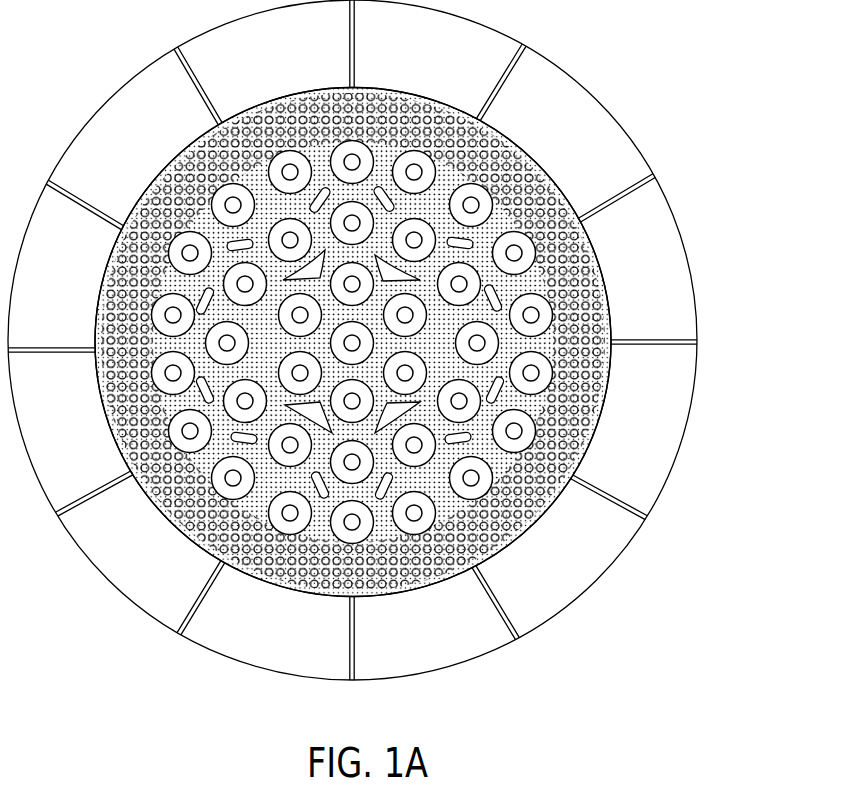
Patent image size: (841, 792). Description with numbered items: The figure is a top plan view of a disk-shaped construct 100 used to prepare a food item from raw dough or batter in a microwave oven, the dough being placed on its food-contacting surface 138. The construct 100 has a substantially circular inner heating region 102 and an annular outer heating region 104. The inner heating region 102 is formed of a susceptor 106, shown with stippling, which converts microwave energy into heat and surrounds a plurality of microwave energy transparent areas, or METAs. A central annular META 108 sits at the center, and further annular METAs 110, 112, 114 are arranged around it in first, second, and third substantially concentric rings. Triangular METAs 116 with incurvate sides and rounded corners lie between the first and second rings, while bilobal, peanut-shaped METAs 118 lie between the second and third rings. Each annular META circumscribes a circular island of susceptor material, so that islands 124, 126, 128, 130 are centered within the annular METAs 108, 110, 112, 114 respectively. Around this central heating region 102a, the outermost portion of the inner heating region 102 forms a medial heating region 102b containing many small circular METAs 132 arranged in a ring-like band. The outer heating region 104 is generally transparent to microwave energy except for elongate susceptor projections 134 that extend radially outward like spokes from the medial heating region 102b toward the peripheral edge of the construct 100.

The construct 100 is at (654, 65).
The inner heating region 102 is at (288, 79).
The central heating region 102a is at (504, 207).
The medial heating region 102b is at (188, 158).
The outer heating region 104 is at (141, 84).
The susceptor 106 is at (415, 84).
The annular META 108 is at (376, 346).
The annular META 110 is at (287, 369).
The annular META 112 is at (240, 285).
The annular META 114 is at (538, 372).
The triangular META 116 is at (313, 420).
The bilobal META 118 is at (384, 492).
The susceptor island 124 is at (347, 345).
The susceptor island 126 is at (296, 314).
The susceptor island 128 is at (238, 281).
The susceptor island 130 is at (550, 382).
The circular META 132 is at (601, 266).
The susceptor projection 134 is at (497, 95).
The food-contacting surface 138 is at (60, 440).